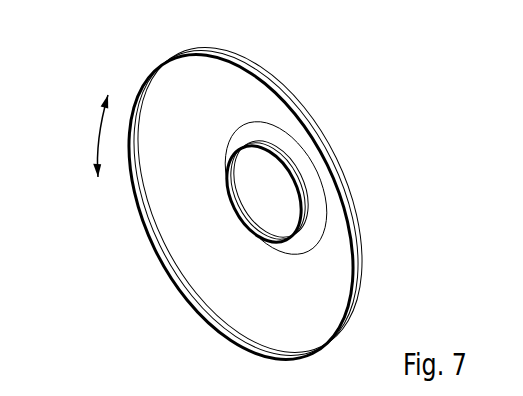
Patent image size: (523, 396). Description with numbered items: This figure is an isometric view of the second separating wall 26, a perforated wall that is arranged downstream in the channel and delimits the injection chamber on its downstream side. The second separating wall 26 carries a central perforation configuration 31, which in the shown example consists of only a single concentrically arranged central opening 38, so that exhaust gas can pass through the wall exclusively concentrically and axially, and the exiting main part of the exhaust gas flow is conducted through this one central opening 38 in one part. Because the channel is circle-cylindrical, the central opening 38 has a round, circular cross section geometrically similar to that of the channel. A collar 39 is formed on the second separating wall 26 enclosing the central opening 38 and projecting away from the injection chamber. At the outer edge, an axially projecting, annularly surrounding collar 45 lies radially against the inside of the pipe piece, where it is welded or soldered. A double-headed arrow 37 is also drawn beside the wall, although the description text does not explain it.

The second separating wall 26 is at (278, 203).
The perforation configuration 31 is at (262, 248).
The pivoting movement 37 is at (98, 133).
The central opening 38 is at (253, 228).
The collar 39 is at (305, 214).
The collar 45 is at (357, 243).